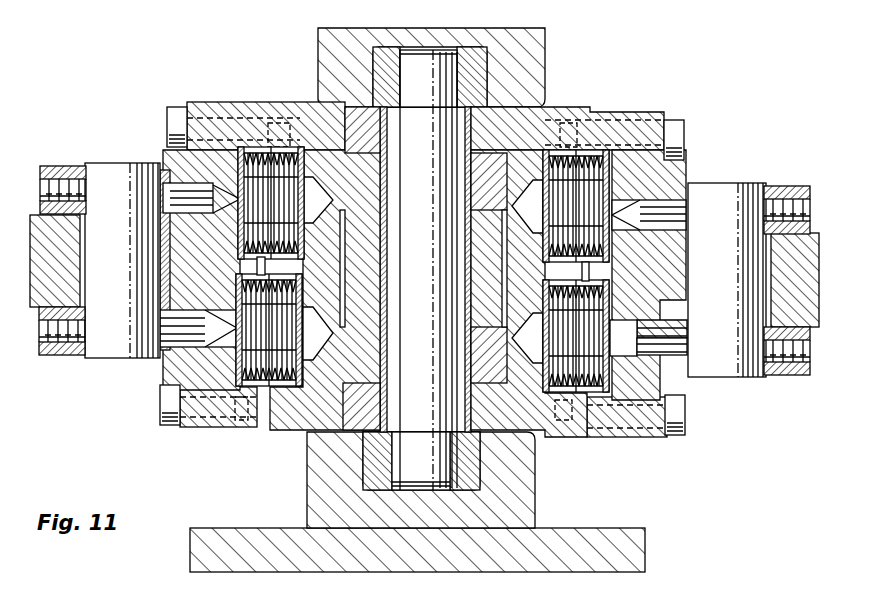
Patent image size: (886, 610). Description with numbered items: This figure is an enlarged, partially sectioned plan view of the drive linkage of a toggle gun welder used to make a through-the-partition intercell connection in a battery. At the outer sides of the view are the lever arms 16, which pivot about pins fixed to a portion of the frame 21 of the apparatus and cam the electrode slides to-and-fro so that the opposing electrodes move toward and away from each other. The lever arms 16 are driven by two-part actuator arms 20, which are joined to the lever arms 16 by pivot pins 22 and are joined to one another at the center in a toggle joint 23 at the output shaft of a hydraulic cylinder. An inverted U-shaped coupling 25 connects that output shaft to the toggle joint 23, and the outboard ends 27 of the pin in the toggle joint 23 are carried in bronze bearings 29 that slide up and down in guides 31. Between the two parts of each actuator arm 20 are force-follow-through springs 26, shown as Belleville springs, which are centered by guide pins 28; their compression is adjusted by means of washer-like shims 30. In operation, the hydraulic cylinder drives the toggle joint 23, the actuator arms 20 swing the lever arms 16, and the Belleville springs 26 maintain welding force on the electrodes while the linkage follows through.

The lever arms 16 is at (40, 222).
The two-part actuator arms 20 is at (273, 100).
The frame 21 is at (624, 565).
The pivot pins 22 is at (105, 173).
The toggle joint 23 is at (400, 137).
The inverted U-shaped coupling 25 is at (580, 113).
The force-follow-through springs 26 is at (247, 173).
The outboard ends 27 is at (422, 67).
The guide pins 28 is at (210, 187).
The bronze bearings 29 is at (352, 30).
The washer-like shims 30 is at (238, 297).
The guides 31 is at (540, 38).